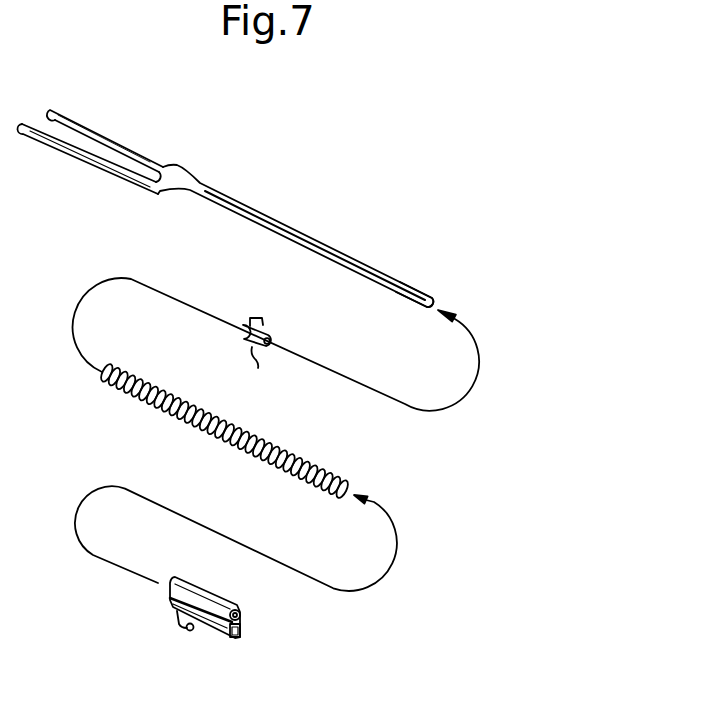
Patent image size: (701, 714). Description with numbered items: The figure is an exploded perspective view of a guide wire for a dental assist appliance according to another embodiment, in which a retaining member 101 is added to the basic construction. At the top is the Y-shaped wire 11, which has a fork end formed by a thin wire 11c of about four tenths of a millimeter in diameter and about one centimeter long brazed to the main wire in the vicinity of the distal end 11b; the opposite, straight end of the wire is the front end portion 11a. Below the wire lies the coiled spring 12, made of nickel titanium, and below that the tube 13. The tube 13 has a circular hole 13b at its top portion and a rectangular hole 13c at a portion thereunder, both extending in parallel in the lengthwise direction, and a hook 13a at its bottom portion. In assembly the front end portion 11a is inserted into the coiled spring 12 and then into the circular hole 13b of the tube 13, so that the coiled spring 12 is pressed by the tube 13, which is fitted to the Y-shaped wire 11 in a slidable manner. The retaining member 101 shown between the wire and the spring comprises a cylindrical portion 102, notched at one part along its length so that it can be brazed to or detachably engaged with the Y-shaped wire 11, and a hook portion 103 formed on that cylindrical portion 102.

The Y-shaped wire 11 is at (210, 182).
The front end portion 11a is at (418, 290).
The distal end 11b is at (77, 120).
The thin wire 11c is at (80, 157).
The coiled spring 12 is at (332, 476).
The tube 13 is at (170, 605).
The hook 13a is at (182, 630).
The circular hole 13b is at (240, 613).
The rectangular hole 13c is at (242, 633).
The retaining member 101 is at (273, 340).
The cylindrical portion 102 is at (264, 375).
The hook portion 103 is at (258, 323).